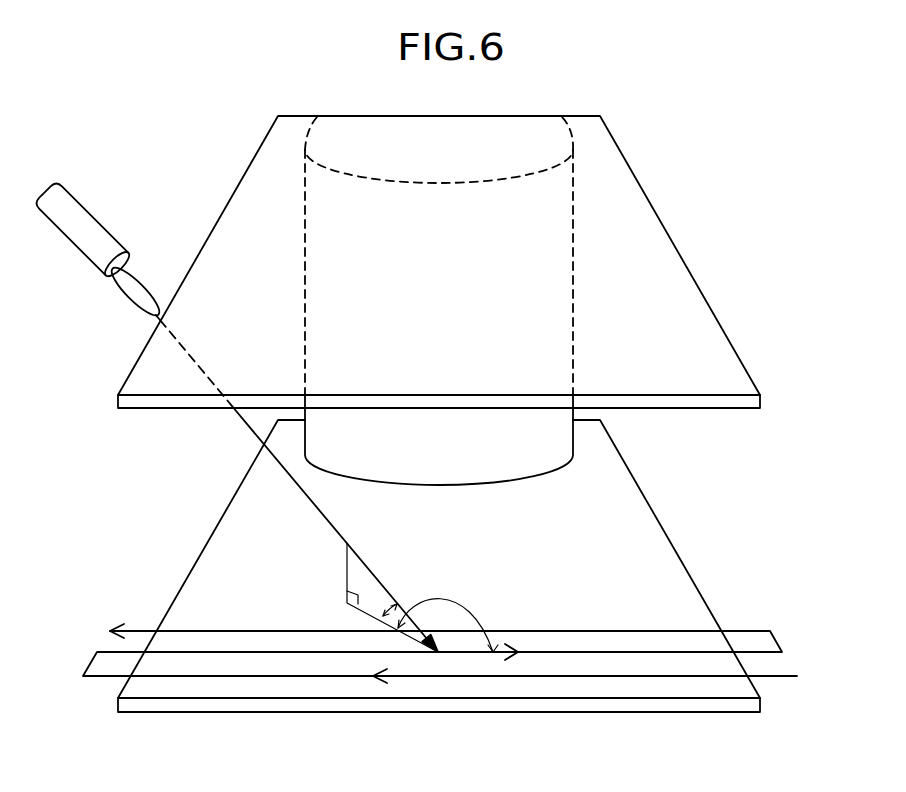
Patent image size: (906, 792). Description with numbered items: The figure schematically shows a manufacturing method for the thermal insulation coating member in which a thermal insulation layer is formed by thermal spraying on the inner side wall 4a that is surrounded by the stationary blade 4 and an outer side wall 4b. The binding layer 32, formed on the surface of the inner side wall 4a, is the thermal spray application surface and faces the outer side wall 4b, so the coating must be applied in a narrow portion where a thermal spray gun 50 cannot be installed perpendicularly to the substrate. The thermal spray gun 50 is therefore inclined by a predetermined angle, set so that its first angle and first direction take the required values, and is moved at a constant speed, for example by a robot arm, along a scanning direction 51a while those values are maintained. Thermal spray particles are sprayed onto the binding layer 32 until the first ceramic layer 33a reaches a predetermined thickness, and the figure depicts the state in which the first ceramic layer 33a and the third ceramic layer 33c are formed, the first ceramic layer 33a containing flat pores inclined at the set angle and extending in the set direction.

The thermal spray gun 50 is at (55, 197).
The outer side wall 4b is at (660, 275).
The stationary blade 4 is at (552, 438).
The inner side wall 4a is at (456, 566).
The binding layer 32 is at (456, 566).
The first ceramic layer 33a is at (456, 566).
The third ceramic layer 33c is at (662, 577).
The scanning direction 51a is at (743, 628).